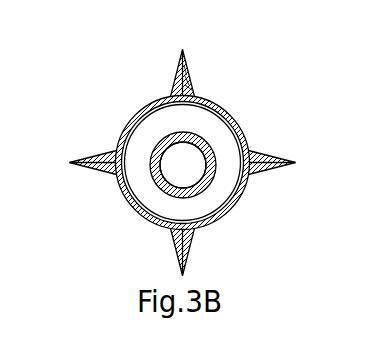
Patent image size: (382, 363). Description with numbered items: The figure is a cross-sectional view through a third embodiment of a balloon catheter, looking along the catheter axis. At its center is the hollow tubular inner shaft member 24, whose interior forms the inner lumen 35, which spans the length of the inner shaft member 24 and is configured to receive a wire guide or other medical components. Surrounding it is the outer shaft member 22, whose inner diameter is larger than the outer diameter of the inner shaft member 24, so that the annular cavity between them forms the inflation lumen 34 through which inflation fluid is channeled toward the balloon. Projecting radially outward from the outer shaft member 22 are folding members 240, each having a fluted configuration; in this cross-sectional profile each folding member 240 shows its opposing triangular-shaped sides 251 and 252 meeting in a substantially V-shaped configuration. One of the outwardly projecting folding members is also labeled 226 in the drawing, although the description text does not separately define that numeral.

The outer shaft member 22 is at (238, 185).
The inner shaft member 24 is at (193, 195).
The inflation lumen 34 is at (148, 140).
The inner lumen 35 is at (183, 160).
The right fin 226 is at (248, 136).
The folding member 240 is at (92, 150).
The triangular-shaped side 251 is at (175, 80).
The triangular-shaped side 252 is at (188, 75).